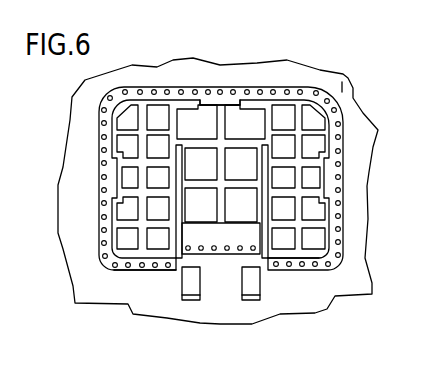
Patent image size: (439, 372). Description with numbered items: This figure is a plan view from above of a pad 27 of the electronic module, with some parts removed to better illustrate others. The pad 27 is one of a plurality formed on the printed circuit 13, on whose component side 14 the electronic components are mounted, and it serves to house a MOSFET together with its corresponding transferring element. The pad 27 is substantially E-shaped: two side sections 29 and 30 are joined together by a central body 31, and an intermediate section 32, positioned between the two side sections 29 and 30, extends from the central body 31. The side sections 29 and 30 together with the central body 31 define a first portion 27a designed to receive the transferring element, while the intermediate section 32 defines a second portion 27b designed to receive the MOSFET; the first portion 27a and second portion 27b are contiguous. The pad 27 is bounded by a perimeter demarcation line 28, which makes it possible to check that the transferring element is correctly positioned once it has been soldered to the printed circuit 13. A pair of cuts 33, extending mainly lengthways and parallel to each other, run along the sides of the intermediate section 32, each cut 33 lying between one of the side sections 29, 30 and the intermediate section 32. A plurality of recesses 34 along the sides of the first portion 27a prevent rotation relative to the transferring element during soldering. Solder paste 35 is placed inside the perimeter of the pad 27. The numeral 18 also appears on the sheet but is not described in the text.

The printed circuit 13 is at (243, 191).
The component side 14 is at (352, 58).
The element 18 is at (428, 361).
The pad 27 is at (258, 178).
The first portion 27a is at (192, 70).
The second portion 27b is at (208, 277).
The perimeter demarcation line 28 is at (344, 108).
The side section 29 is at (121, 307).
The side section 30 is at (298, 255).
The central body 31 is at (220, 127).
The intermediate section 32 is at (221, 292).
The cut 33 is at (215, 252).
The recess 34 is at (214, 100).
The solder paste 35 is at (397, 226).